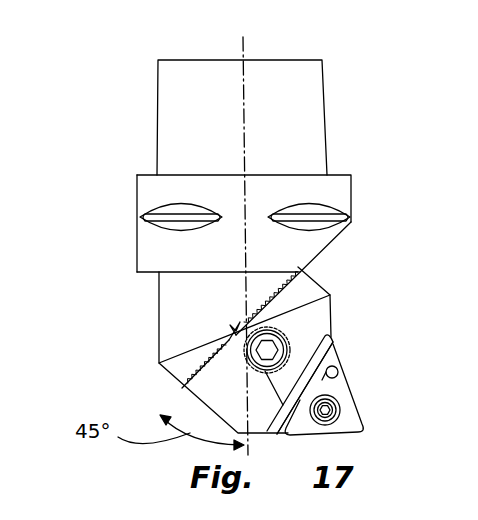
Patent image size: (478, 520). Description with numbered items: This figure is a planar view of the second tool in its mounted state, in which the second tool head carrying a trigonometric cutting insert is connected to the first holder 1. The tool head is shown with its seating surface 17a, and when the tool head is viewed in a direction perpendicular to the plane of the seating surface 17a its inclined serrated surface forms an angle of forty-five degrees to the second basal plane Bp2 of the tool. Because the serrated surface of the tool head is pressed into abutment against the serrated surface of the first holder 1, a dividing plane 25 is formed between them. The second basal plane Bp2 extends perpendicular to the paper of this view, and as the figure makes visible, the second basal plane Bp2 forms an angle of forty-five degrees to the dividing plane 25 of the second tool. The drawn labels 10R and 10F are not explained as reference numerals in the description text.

The first holder 1 is at (355, 142).
The rear seating face 10R is at (308, 262).
The front seating face 10F is at (182, 385).
The dividing plane 25 is at (233, 331).
The seating surface 17a is at (330, 406).
The second basal plane Bp2 is at (238, 41).